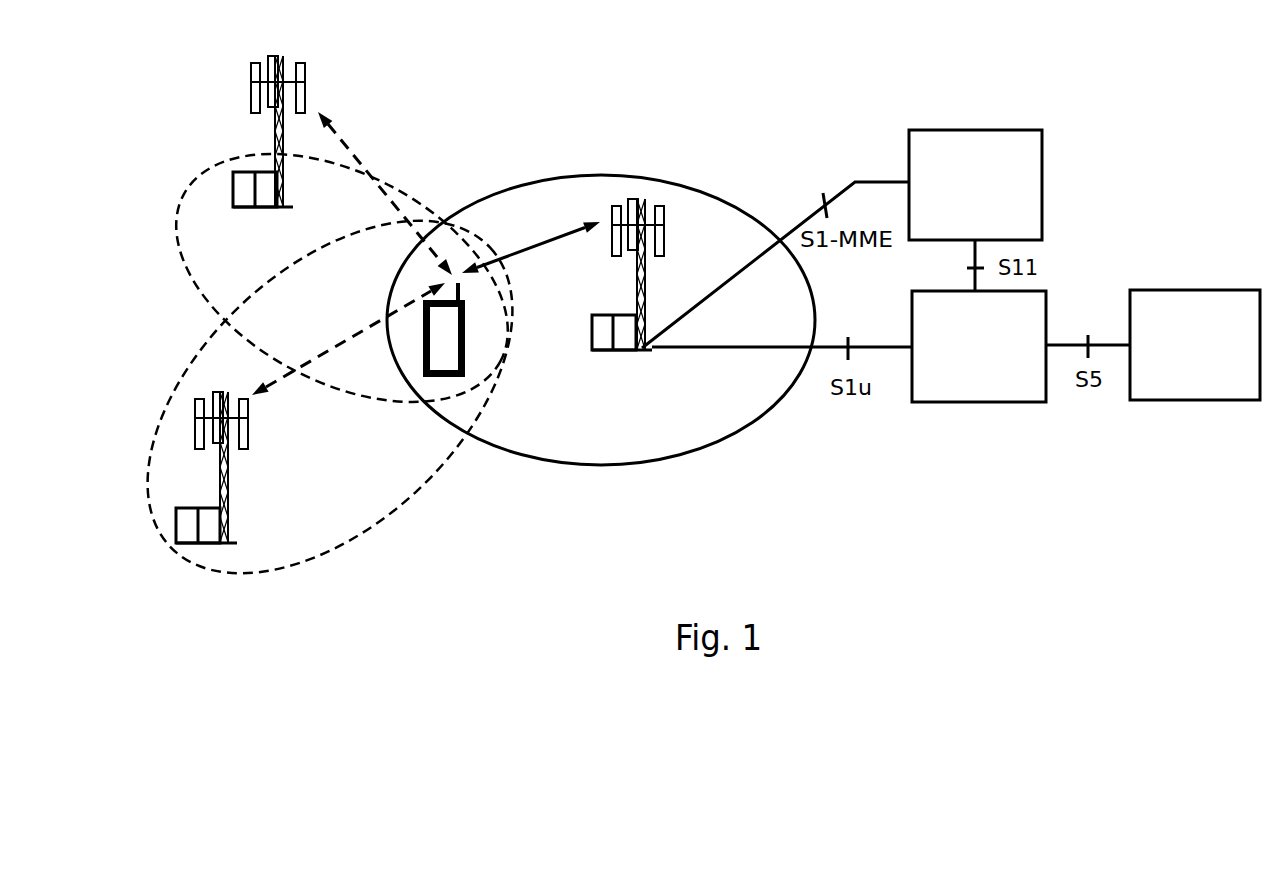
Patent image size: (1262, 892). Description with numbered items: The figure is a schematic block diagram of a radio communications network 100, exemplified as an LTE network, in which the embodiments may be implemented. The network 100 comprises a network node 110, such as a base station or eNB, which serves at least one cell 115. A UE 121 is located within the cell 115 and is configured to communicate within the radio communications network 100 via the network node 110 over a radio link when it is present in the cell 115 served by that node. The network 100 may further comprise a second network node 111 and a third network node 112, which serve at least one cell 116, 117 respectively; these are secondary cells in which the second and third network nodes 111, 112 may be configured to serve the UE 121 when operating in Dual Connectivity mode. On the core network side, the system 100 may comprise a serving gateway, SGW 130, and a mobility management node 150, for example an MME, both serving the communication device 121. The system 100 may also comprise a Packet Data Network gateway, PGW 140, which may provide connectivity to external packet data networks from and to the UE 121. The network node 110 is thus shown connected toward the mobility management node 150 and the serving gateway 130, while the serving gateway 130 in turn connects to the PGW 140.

The radio communications network 100 is at (1083, 64).
The network node 110 is at (664, 228).
The second network node 111 is at (305, 88).
The third network node 112 is at (248, 418).
The cell 115 is at (590, 462).
The cell 116 is at (182, 263).
The cell 117 is at (248, 573).
The UE 121 is at (452, 377).
The serving gateway 130 is at (1001, 344).
The PDN gateway 140 is at (1222, 342).
The mobility management node 150 is at (998, 184).